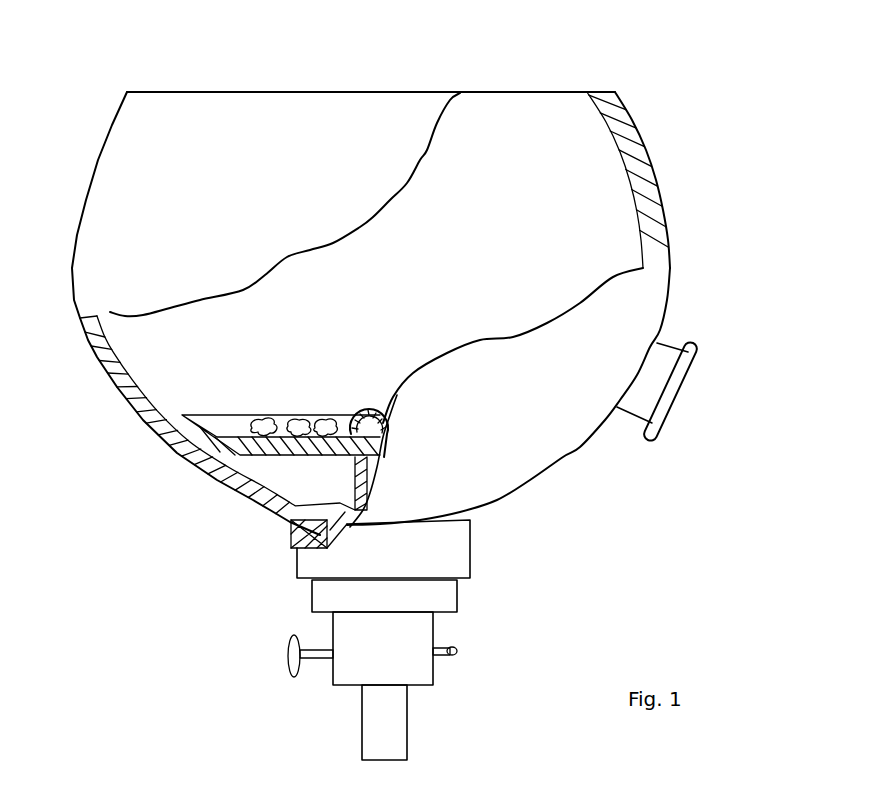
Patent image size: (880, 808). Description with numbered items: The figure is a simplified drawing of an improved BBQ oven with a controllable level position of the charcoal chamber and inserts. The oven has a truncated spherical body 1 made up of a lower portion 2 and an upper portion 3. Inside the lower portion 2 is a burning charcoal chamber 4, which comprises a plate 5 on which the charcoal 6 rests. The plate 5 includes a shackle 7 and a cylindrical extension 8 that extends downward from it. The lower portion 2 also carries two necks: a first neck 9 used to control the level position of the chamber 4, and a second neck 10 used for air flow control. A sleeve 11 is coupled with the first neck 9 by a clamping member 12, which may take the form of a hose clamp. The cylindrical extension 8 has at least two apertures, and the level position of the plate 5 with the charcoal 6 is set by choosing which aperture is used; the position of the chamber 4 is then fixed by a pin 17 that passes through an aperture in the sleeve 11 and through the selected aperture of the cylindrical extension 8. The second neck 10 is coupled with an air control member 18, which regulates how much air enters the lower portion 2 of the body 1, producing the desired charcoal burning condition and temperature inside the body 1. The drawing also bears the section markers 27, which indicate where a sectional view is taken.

The truncated spherical body 1 is at (398, 108).
The lower portion 2 is at (107, 415).
The upper portion 3 is at (673, 133).
The burning charcoal chamber 4 is at (330, 380).
The plate 5 is at (233, 420).
The charcoal 6 is at (325, 418).
The shackle 7 is at (377, 407).
The cylindrical extension 8 is at (353, 471).
The first neck 9 is at (345, 530).
The second neck 10 is at (660, 360).
The sleeve 11 is at (323, 549).
The clamping member 12 is at (290, 543).
The pin 17 is at (293, 663).
The air control member 18 is at (665, 420).
The section line 27 is at (107, 27).